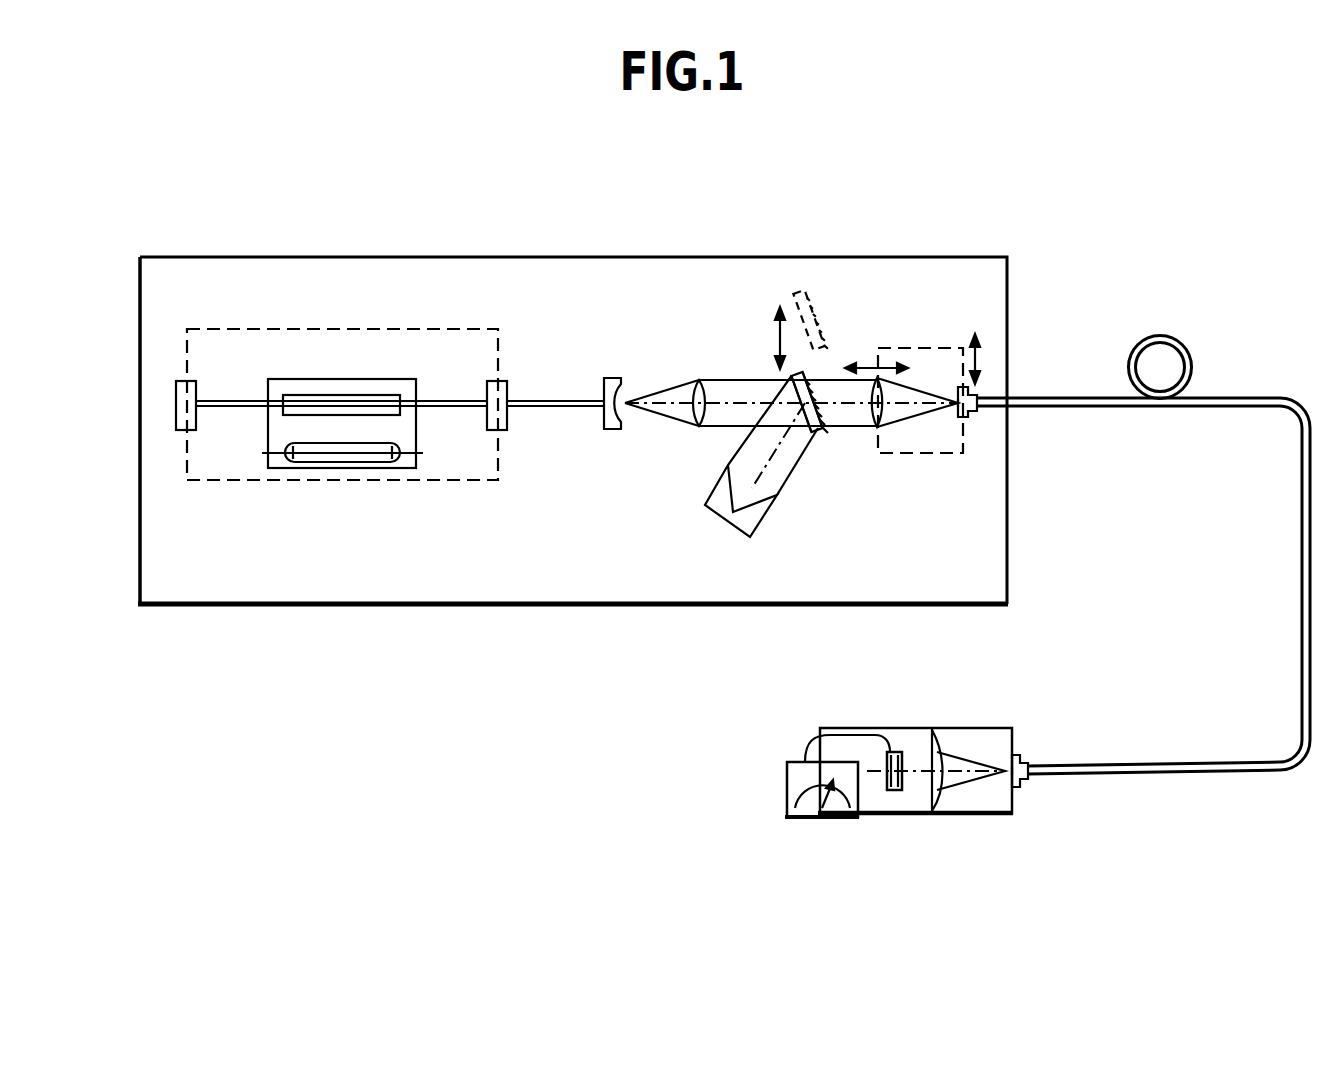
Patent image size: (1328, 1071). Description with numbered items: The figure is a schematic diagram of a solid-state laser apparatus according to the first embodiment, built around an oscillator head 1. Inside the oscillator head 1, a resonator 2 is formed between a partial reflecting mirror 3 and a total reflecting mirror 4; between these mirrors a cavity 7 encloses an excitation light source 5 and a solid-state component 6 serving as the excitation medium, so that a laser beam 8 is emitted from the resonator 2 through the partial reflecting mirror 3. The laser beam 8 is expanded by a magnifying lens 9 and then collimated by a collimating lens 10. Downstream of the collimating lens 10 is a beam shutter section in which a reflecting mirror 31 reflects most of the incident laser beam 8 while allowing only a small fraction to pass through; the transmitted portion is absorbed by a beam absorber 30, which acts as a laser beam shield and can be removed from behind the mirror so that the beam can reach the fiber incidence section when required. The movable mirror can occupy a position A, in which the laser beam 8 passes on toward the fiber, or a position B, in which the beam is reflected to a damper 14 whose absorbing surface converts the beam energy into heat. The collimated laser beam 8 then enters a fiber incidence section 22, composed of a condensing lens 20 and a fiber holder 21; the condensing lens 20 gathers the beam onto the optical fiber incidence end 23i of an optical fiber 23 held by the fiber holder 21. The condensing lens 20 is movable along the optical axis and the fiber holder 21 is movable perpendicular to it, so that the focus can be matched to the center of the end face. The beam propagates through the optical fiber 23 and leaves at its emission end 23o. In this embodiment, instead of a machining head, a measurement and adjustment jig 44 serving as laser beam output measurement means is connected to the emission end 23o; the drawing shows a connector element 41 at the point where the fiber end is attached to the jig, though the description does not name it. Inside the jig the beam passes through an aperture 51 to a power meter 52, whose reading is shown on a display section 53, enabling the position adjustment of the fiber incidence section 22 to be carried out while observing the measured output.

The oscillator head 1 is at (600, 256).
The resonator 2 is at (232, 328).
The partial reflecting mirror 3 is at (502, 381).
The total reflecting mirror 4 is at (175, 432).
The excitation light source 5 is at (343, 463).
The solid-state component 6 is at (385, 395).
The cavity 7 is at (320, 378).
The laser beam 8 is at (555, 400).
The magnifying lens 9 is at (610, 377).
The collimating lens 10 is at (697, 380).
The damper 14 is at (716, 512).
The condensing lens 20 is at (878, 430).
The fiber holder 21 is at (972, 413).
The fiber incidence section 22 is at (922, 348).
The optical fiber 23 is at (1062, 397).
The optical fiber incidence end 23i is at (958, 405).
The emission end 23o is at (1007, 792).
The beam absorber 30 is at (829, 433).
The reflecting mirror 31 is at (812, 434).
The fiber connector 41 is at (1020, 758).
The measurement and adjustment jig 44 is at (947, 814).
The aperture 51 is at (936, 730).
The power meter 52 is at (899, 792).
The display section 53 is at (787, 790).
The position A is at (873, 352).
The position B is at (832, 418).